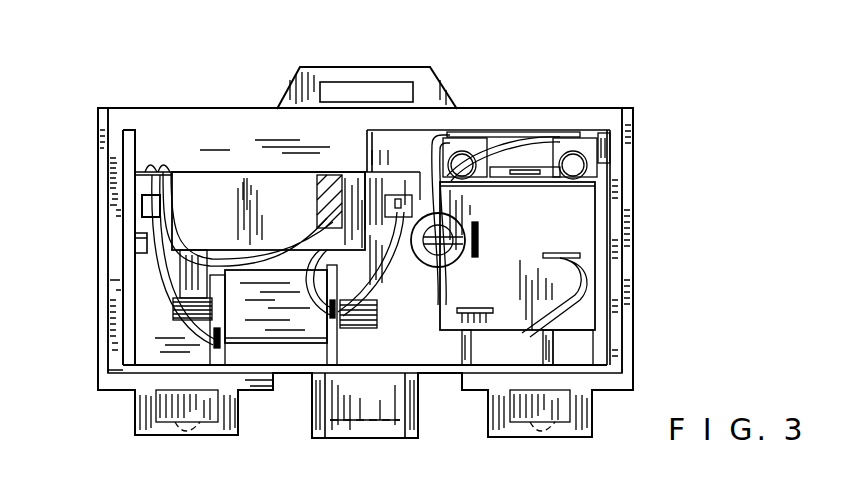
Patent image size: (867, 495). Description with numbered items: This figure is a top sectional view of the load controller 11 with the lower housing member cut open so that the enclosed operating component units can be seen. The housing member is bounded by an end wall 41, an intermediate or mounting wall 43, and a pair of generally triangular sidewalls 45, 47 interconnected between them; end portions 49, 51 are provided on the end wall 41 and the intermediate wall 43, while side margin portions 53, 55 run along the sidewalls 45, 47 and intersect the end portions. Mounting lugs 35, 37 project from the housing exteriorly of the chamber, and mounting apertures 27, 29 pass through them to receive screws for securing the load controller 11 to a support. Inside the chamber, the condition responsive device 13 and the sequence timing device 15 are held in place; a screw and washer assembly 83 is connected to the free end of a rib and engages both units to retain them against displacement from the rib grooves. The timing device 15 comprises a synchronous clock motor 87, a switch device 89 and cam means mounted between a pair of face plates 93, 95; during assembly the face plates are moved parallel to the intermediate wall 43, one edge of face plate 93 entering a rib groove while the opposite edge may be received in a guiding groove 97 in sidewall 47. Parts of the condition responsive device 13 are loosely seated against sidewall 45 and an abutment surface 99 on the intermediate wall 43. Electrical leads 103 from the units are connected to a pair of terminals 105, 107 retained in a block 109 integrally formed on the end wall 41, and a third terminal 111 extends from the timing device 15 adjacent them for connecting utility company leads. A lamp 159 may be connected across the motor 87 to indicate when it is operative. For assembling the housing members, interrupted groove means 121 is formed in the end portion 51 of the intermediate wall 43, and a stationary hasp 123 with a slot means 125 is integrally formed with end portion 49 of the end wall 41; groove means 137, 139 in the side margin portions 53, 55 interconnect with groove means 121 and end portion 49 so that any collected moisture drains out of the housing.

The load controller 11 is at (650, 126).
The condition responsive device 13 is at (511, 226).
The sequence timing device 15 is at (222, 165).
The mounting aperture 27 is at (535, 430).
The mounting aperture 29 is at (187, 437).
The mounting lug 35 is at (592, 423).
The mounting lug 37 is at (135, 412).
The end wall 41 is at (162, 118).
The intermediate wall 43 is at (373, 373).
The sidewall 45 is at (633, 170).
The sidewall 47 is at (98, 127).
The end portion 49 is at (222, 108).
The end portion 51 is at (392, 367).
The side margin portion 53 is at (628, 217).
The side margin portion 55 is at (105, 155).
The screw and washer assembly 83 is at (453, 257).
The synchronous clock motor 87 is at (283, 316).
The switch device 89 is at (226, 225).
The face plate 93 is at (132, 245).
The face plate 95 is at (267, 170).
The guiding groove 97 is at (147, 233).
The abutment surface 99 is at (547, 347).
The electrical leads 103 is at (375, 276).
The terminal 105 is at (582, 148).
The terminal 107 is at (473, 148).
The block 109 is at (513, 130).
The third terminal 111 is at (392, 190).
The interrupted groove means 121 is at (248, 380).
The stationary hasp 123 is at (292, 87).
The slot means 125 is at (320, 90).
The groove means 137 is at (613, 280).
The groove means 139 is at (113, 318).
The lamp 159 is at (322, 192).